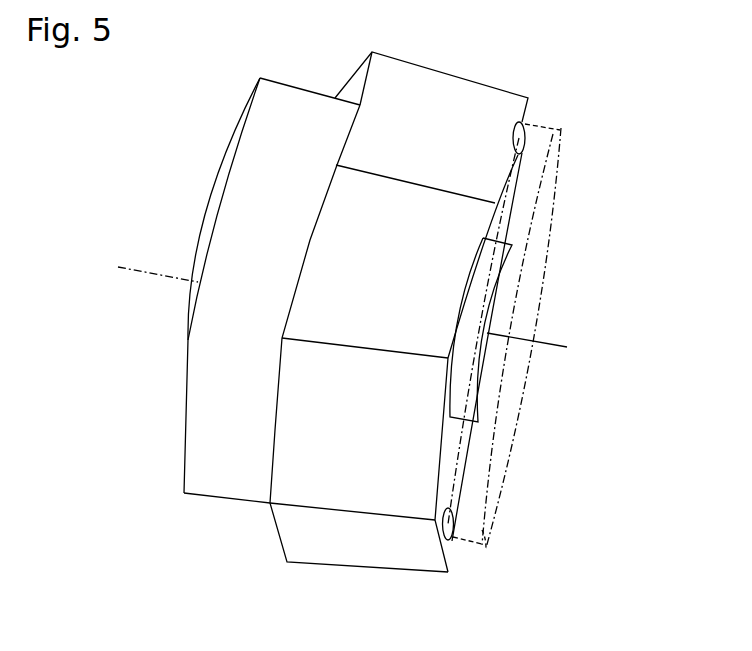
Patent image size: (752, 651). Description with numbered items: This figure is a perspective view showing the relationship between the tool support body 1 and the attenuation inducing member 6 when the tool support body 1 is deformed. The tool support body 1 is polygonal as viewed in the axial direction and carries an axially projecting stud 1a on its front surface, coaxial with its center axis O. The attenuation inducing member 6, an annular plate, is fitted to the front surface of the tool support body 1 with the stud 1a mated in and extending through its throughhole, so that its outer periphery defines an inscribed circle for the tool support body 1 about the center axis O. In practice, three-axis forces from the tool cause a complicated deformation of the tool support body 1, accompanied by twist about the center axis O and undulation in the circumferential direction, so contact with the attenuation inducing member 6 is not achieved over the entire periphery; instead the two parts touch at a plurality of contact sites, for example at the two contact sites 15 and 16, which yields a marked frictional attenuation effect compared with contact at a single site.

The tool support body 1 is at (460, 76).
The stud 1a is at (470, 380).
The contact site 15 is at (525, 137).
The contact site 16 is at (453, 530).
The attenuation inducing member 6 is at (553, 235).
The center axis O is at (547, 345).